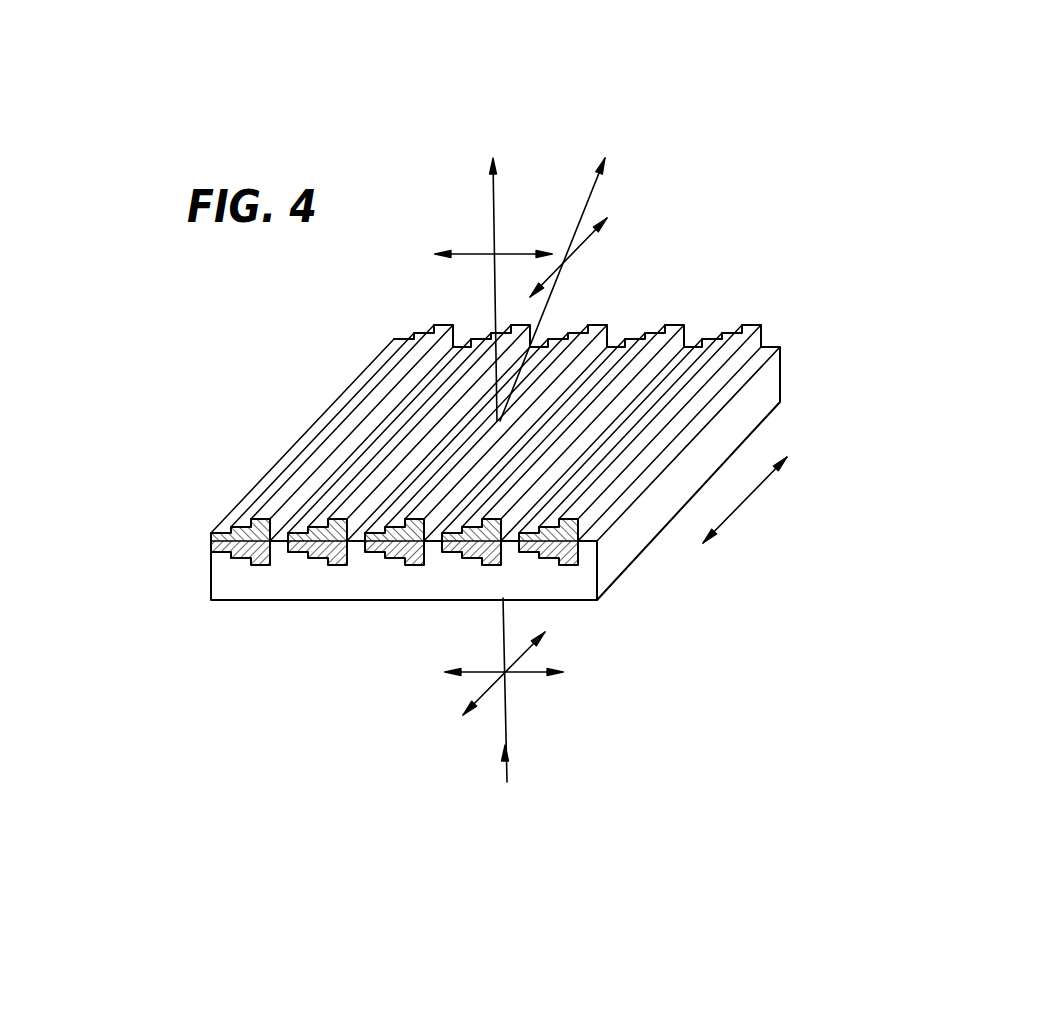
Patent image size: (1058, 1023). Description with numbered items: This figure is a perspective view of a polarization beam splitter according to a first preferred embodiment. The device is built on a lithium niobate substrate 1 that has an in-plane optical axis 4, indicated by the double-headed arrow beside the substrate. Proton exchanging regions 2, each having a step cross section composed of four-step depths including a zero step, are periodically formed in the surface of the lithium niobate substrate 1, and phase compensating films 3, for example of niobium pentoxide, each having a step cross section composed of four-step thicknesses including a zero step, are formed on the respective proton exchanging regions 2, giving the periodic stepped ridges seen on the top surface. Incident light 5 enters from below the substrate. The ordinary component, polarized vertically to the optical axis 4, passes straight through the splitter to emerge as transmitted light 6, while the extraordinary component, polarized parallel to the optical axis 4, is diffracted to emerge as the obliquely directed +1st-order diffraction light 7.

The lithium niobate substrate 1 is at (398, 575).
The proton exchanging region 2 is at (240, 557).
The phase compensating film 3 is at (234, 523).
The optical axis 4 is at (750, 497).
The incident light 5 is at (507, 782).
The transmitted light 6 is at (492, 152).
The +1st-order diffraction light 7 is at (604, 156).